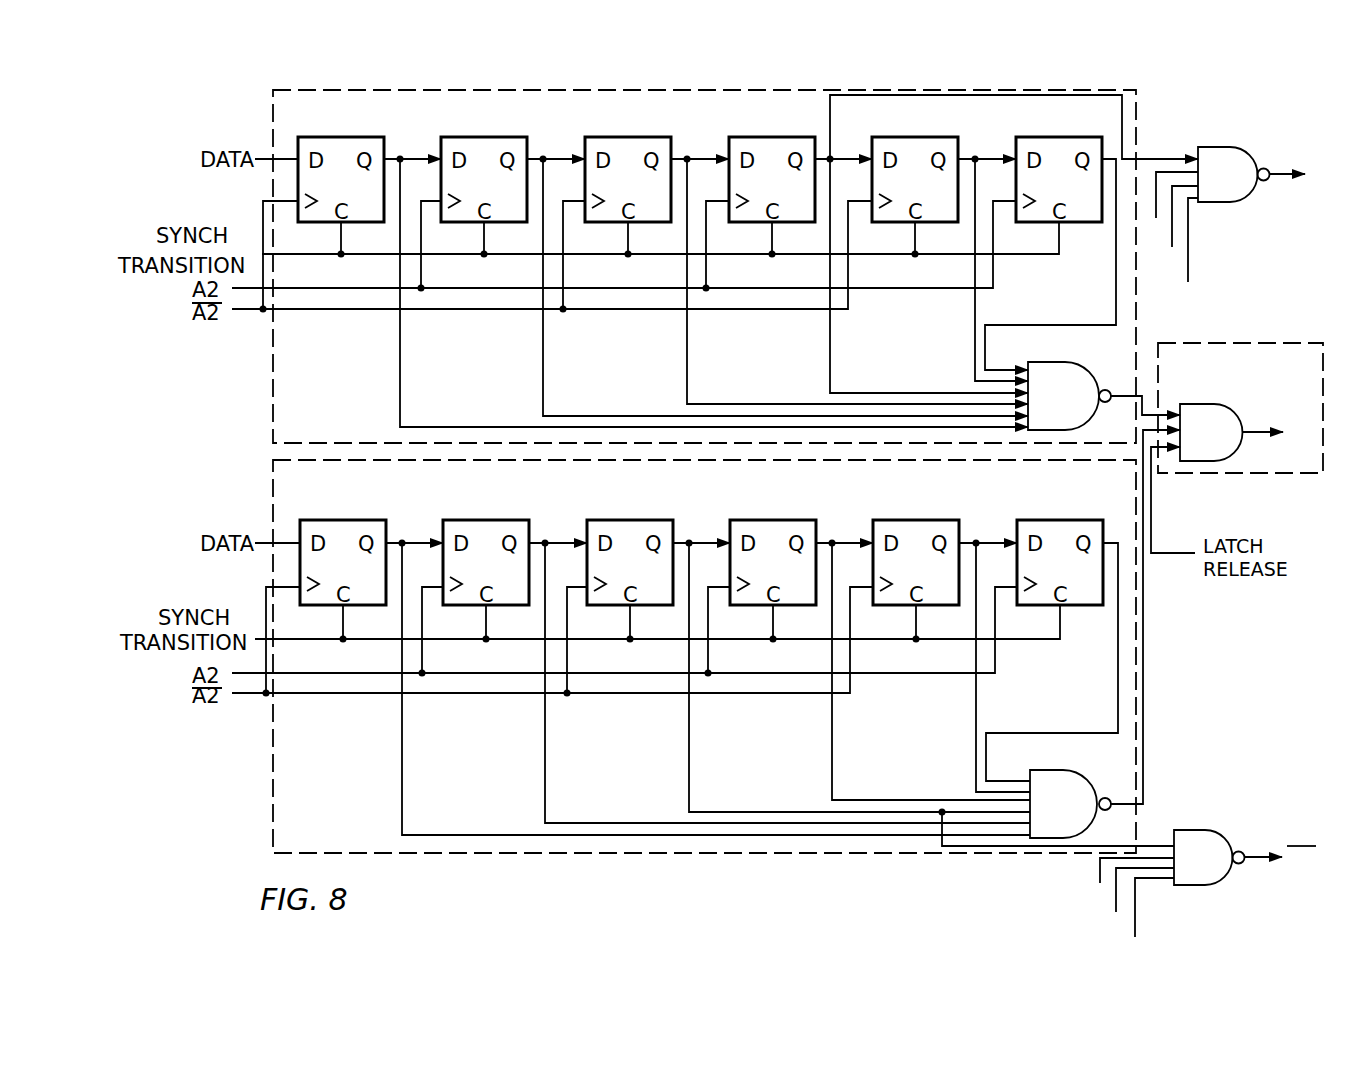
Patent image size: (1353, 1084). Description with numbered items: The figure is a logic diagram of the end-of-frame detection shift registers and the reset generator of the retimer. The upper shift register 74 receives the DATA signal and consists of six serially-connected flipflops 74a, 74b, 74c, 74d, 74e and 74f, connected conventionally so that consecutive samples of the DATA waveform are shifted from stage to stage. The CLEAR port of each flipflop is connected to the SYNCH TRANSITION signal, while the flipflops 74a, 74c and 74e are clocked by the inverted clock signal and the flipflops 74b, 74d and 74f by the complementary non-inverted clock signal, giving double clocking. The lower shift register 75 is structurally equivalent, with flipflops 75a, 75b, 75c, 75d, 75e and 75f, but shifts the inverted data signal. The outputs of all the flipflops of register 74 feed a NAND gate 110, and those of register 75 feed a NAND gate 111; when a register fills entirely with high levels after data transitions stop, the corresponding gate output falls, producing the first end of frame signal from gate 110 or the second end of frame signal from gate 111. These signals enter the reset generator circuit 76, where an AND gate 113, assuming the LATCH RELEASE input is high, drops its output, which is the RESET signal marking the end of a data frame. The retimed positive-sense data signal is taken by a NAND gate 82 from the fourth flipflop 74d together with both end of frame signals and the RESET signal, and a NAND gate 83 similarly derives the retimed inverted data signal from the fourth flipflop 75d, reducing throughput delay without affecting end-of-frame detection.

The shift register 74 is at (593, 91).
The flipflop 74a is at (341, 137).
The flipflop 74b is at (484, 137).
The flipflop 74c is at (628, 137).
The flipflop 74d is at (772, 137).
The flipflop 74e is at (915, 137).
The flipflop 74f is at (1059, 137).
The shift register 75 is at (273, 462).
The flipflop 75a is at (343, 520).
The flipflop 75b is at (486, 520).
The flipflop 75c is at (630, 520).
The flipflop 75d is at (773, 520).
The flipflop 75e is at (916, 520).
The flipflop 75f is at (1060, 520).
The reset generator circuit 76 is at (1242, 343).
The NAND gate 82 is at (1228, 147).
The NAND gate 83 is at (1200, 885).
The NAND gate 110 is at (1056, 363).
The NAND gate 111 is at (1060, 770).
The AND gate 113 is at (1224, 404).